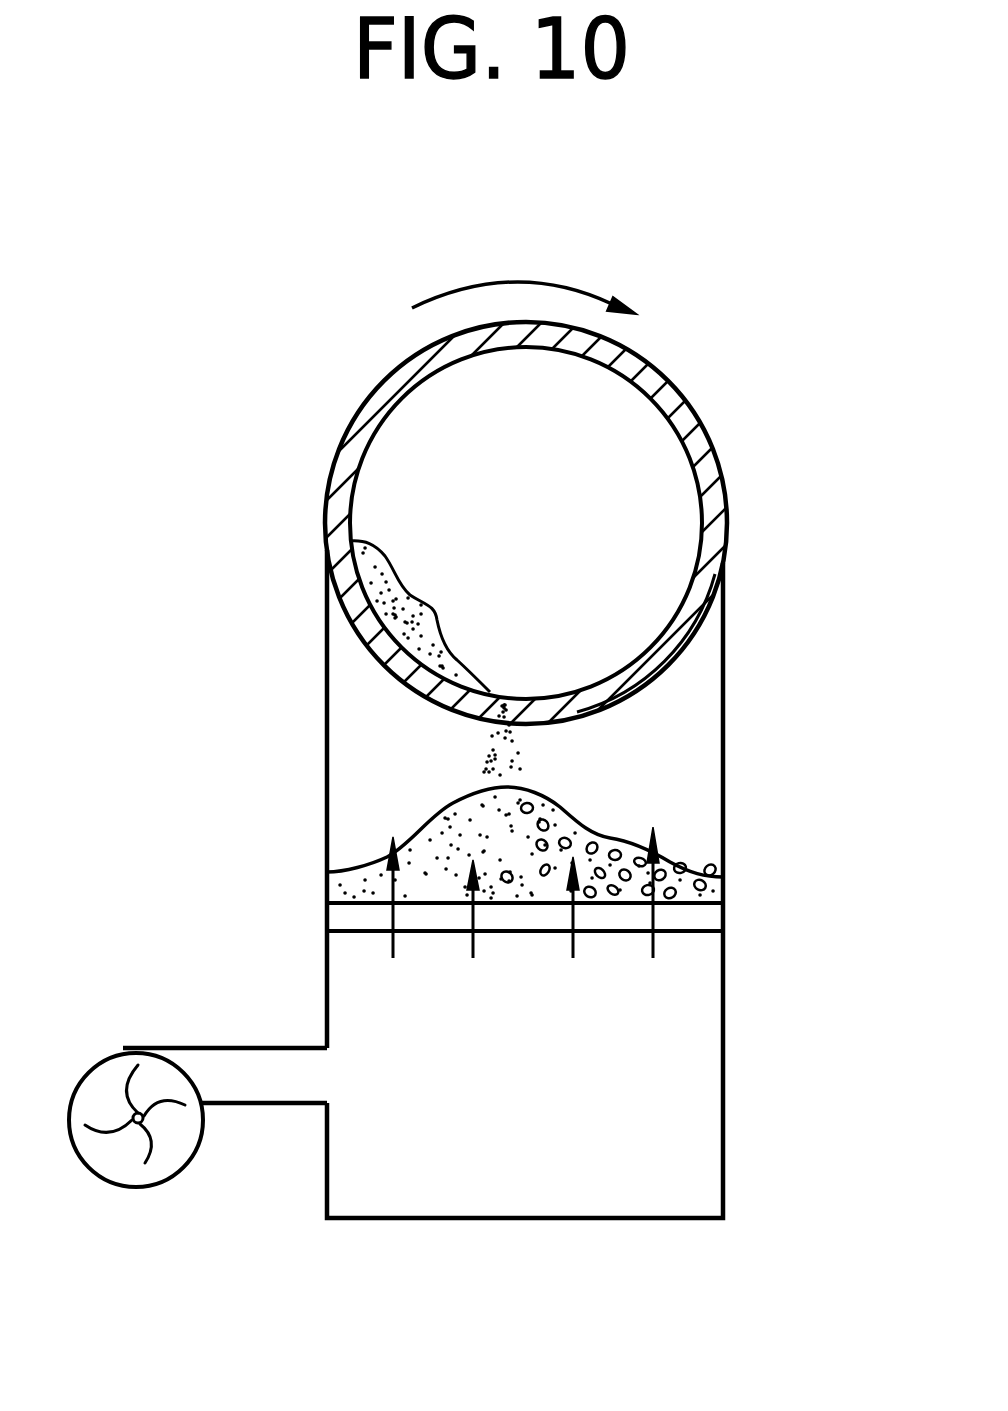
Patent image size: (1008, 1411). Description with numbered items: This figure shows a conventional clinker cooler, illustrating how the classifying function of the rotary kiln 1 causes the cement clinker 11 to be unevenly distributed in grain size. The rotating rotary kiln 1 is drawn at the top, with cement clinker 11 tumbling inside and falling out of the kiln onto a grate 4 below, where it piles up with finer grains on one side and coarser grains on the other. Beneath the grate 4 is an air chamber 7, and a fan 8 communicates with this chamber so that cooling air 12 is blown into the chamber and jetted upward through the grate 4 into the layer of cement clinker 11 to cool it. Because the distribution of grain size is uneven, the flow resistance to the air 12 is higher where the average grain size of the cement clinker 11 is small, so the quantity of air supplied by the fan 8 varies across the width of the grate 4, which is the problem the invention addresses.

The rotary kiln 1 is at (705, 424).
The screen / perforated plate 4 is at (712, 922).
The air chamber / housing 7 is at (507, 1178).
The fan 8 is at (122, 1068).
The cement clinker 11 is at (445, 827).
The air flow 12 is at (655, 950).